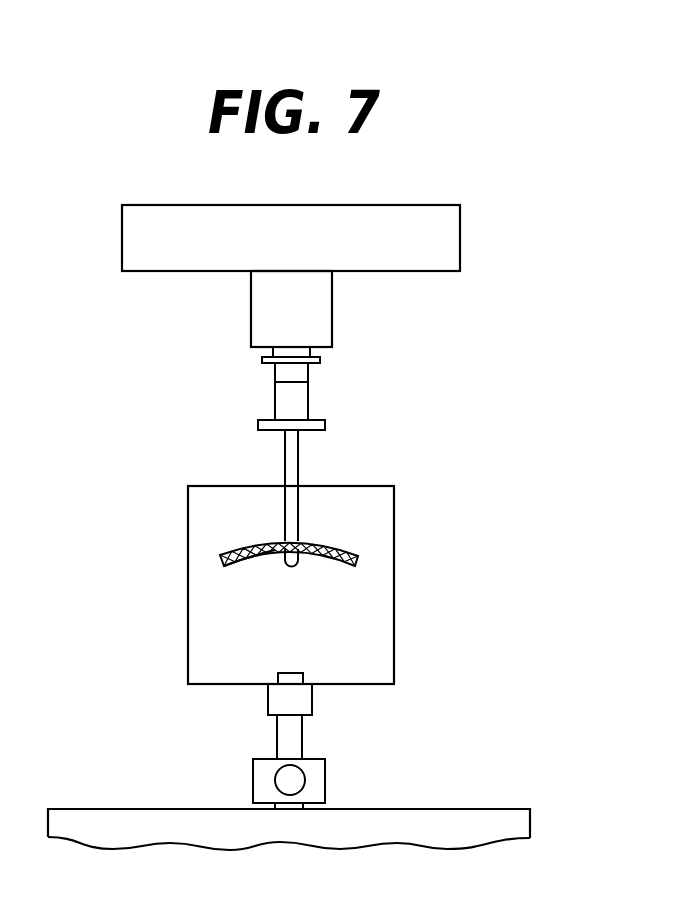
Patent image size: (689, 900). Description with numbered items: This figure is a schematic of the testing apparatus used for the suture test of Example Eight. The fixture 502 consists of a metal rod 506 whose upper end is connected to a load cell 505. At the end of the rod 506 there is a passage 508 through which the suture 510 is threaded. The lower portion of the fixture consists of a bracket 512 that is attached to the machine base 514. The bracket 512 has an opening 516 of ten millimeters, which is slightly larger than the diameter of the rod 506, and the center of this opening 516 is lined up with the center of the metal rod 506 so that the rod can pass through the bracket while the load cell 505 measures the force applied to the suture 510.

The fixture 502 is at (226, 354).
The load cell 505 is at (460, 240).
The metal rod 506 is at (283, 457).
The passage 508 is at (283, 540).
The suture 510 is at (237, 563).
The bracket 512 is at (187, 655).
The machine base 514 is at (428, 808).
The opening 516 is at (283, 486).